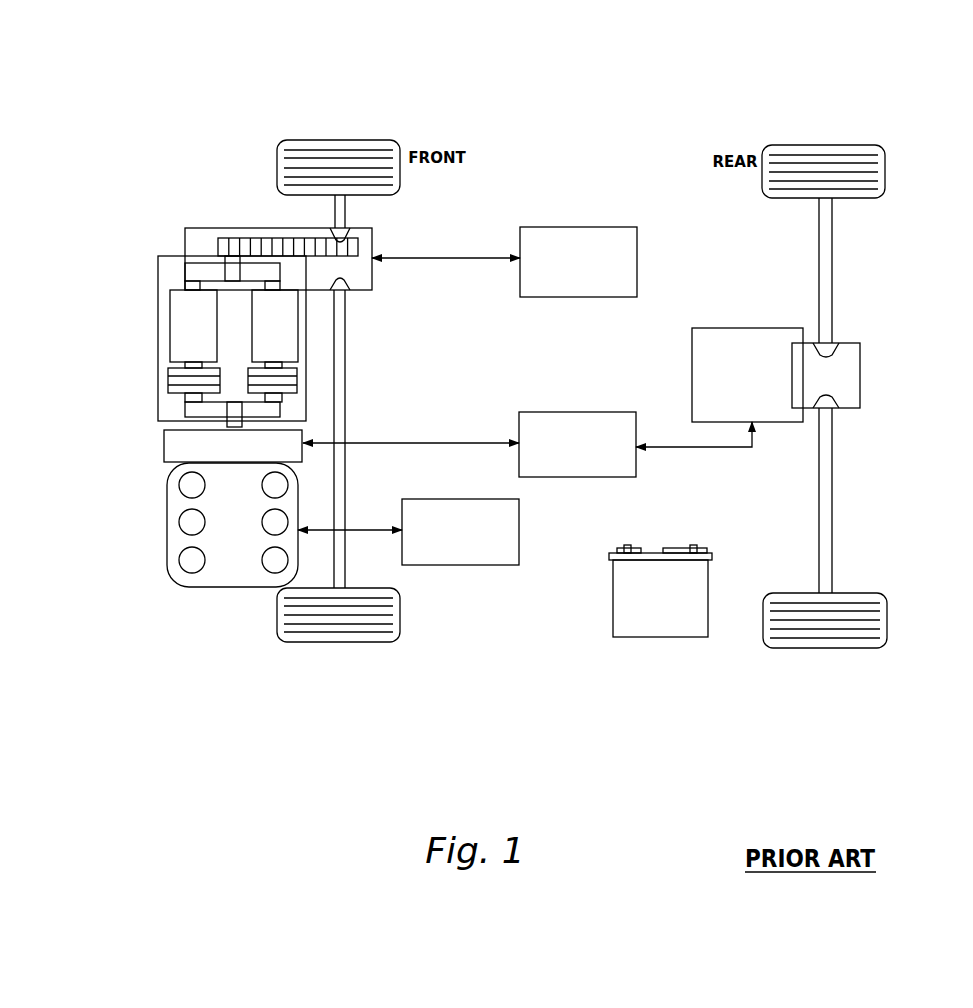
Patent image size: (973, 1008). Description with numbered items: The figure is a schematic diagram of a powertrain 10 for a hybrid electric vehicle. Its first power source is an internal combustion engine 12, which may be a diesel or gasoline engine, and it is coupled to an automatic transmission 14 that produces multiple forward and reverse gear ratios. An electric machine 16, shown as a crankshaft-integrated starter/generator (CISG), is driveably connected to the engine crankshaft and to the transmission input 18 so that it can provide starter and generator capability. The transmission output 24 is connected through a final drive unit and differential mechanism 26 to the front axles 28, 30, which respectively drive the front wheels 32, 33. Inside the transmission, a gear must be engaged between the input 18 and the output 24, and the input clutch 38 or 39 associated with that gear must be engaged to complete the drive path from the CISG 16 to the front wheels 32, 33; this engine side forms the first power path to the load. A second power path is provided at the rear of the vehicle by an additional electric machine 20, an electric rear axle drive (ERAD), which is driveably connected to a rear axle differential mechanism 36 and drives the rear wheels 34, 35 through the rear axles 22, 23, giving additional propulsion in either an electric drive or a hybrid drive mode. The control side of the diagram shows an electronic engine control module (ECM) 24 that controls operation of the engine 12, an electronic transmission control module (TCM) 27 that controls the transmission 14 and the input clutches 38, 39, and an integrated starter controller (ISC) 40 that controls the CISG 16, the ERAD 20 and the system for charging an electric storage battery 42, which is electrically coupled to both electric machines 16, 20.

The powertrain 10 is at (684, 110).
The internal combustion engine 12 is at (245, 587).
The automatic transmission 14 is at (158, 403).
The electric machine 16 is at (163, 447).
The transmission input 18 is at (242, 413).
The additional electric machine 20 is at (780, 328).
The rear axle 22 is at (832, 247).
The rear axle 23 is at (832, 543).
The transmission output 24 is at (232, 263).
The final drive unit and differential mechanism 26 is at (212, 228).
The transmission control module 27 is at (585, 227).
The front axle 28 is at (330, 218).
The front axle 30 is at (345, 467).
The front wheel 32 is at (335, 140).
The front wheel 33 is at (315, 642).
The rear wheel 34 is at (838, 145).
The rear wheel 35 is at (810, 648).
The rear axle differential mechanism 36 is at (860, 378).
The input clutch 38 is at (297, 387).
The input clutch 39 is at (168, 385).
The integrated starter controller 40 is at (578, 412).
The electric storage battery 42 is at (678, 637).